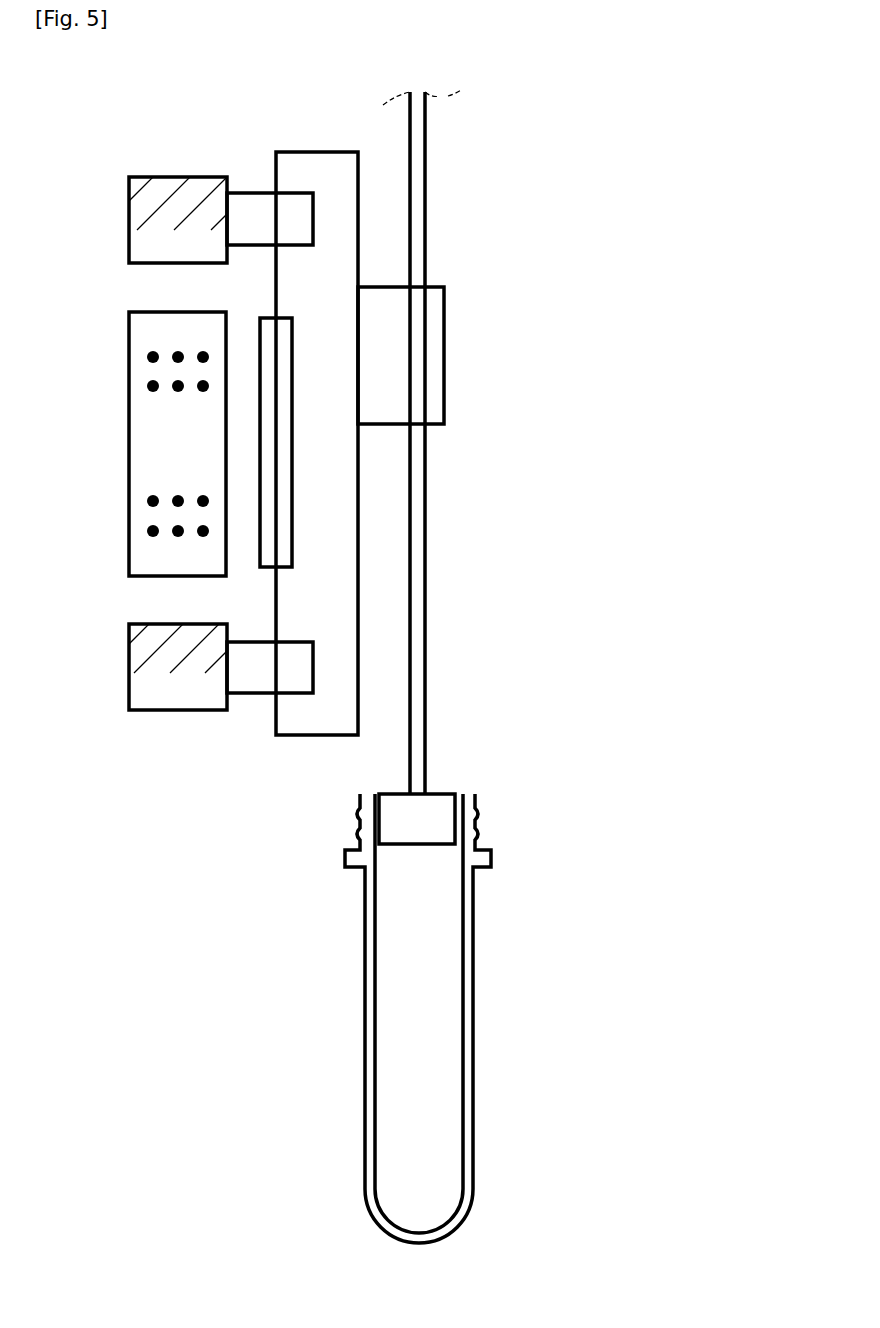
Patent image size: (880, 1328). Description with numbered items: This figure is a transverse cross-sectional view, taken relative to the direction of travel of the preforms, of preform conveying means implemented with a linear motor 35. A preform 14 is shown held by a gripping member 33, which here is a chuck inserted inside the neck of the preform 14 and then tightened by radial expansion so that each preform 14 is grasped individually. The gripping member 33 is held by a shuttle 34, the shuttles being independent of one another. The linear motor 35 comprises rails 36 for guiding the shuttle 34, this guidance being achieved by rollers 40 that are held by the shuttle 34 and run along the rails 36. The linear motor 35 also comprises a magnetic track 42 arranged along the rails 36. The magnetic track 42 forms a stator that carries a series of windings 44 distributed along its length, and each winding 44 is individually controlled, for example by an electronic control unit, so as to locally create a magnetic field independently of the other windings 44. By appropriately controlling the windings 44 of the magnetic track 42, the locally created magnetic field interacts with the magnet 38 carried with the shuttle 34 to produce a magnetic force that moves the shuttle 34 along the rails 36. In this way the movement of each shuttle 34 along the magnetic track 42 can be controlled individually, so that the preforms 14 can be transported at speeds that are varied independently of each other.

The preform 14 is at (500, 995).
The gripping member 33 is at (437, 812).
The shuttle 34 is at (392, 475).
The linear motor 35 is at (512, 251).
The rail 36 is at (172, 213).
The magnet 38 is at (278, 493).
The roller 40 is at (258, 213).
The magnetic track 42 is at (160, 437).
The winding 44 is at (153, 357).